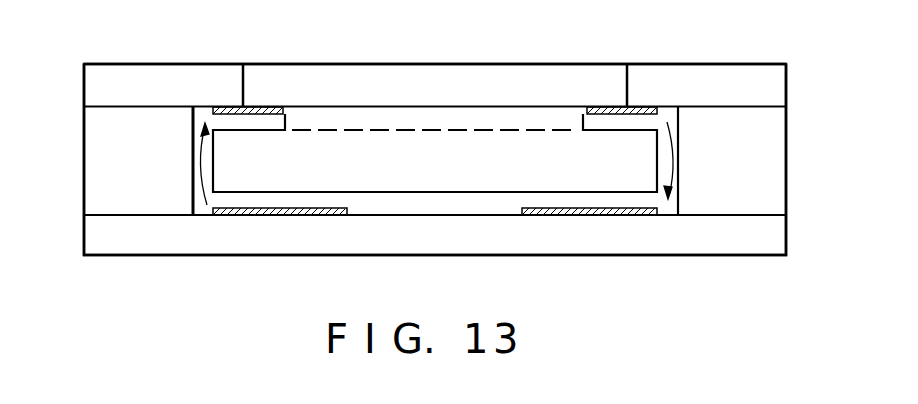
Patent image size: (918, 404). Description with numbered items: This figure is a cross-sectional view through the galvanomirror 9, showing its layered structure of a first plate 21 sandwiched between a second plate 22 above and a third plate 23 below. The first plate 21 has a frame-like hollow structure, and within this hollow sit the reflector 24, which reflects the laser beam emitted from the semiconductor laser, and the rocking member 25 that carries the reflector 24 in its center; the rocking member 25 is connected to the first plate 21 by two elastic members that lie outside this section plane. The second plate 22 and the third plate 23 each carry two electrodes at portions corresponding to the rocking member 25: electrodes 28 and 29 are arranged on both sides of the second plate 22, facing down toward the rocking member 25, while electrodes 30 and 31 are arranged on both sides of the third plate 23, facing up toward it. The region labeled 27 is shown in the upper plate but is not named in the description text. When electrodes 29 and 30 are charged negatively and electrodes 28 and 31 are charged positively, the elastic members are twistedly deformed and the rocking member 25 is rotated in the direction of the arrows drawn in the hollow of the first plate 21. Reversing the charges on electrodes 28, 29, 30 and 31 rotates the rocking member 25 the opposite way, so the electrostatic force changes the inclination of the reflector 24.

The galvanomirror 9 is at (157, 53).
The first plate 21 is at (793, 167).
The second plate 22 is at (792, 78).
The third plate 23 is at (793, 228).
The reflector 24 is at (478, 118).
The rocking member 25 is at (457, 180).
The top surface 27 is at (370, 86).
The electrode 28 is at (640, 105).
The electrode 29 is at (225, 105).
The electrode 30 is at (587, 218).
The electrode 31 is at (290, 216).